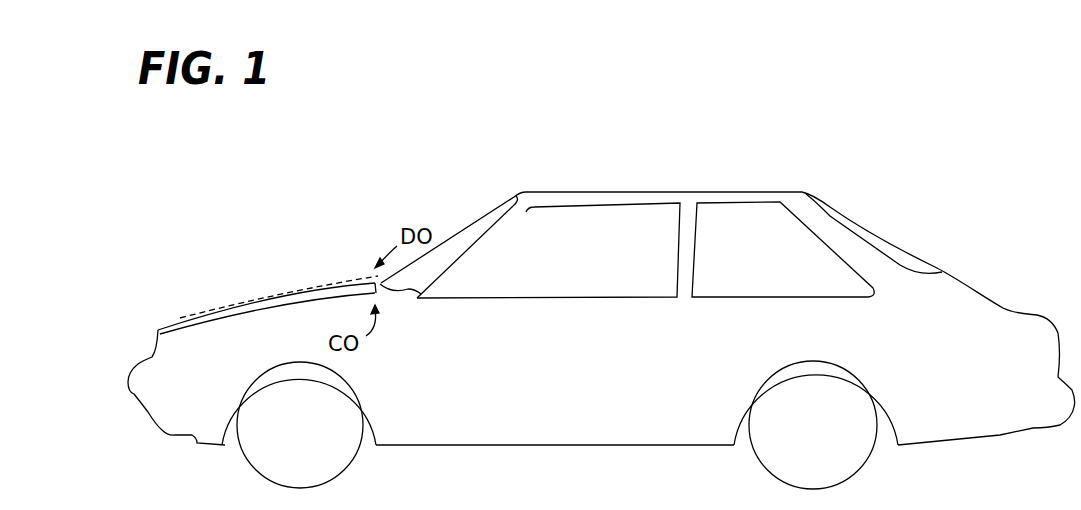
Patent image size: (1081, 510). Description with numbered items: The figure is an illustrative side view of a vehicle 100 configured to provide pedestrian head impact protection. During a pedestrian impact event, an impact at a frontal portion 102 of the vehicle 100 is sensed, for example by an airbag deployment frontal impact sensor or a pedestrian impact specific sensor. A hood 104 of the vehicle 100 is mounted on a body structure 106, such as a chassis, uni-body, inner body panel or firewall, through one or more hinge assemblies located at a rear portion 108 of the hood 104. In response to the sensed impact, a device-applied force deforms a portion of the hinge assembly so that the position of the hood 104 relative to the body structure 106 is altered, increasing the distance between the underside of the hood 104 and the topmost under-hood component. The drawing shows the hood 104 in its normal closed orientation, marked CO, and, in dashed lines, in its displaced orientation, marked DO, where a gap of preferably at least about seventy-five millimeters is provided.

The vehicle 100 is at (377, 186).
The frontal portion 102 is at (130, 383).
The hood 104 is at (246, 308).
The body structure 106 is at (296, 318).
The rear portion 108 is at (377, 293).